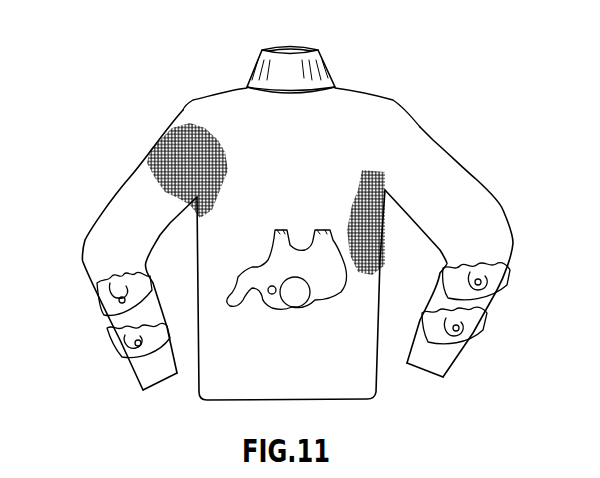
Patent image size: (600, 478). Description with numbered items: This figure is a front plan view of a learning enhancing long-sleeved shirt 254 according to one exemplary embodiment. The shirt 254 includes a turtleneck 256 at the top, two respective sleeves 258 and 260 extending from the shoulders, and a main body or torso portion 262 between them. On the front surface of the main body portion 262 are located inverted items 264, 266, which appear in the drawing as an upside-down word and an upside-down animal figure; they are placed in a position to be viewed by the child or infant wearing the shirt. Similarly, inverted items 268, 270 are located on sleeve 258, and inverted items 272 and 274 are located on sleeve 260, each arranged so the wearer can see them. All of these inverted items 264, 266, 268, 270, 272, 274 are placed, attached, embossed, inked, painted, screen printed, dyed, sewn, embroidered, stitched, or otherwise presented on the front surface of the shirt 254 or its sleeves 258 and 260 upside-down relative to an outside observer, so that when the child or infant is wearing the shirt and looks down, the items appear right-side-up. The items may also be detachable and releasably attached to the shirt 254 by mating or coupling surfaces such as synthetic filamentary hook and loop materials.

The long-sleeved shirt 254 is at (460, 102).
The turtleneck 256 is at (323, 64).
The sleeve 258 is at (477, 181).
The sleeve 260 is at (110, 199).
The main body or torso portion 262 is at (383, 257).
The inverted item 264 is at (344, 352).
The inverted item 266 is at (325, 232).
The inverted item 268 is at (477, 323).
The inverted item 270 is at (507, 270).
The inverted item 272 is at (127, 332).
The inverted item 274 is at (98, 282).